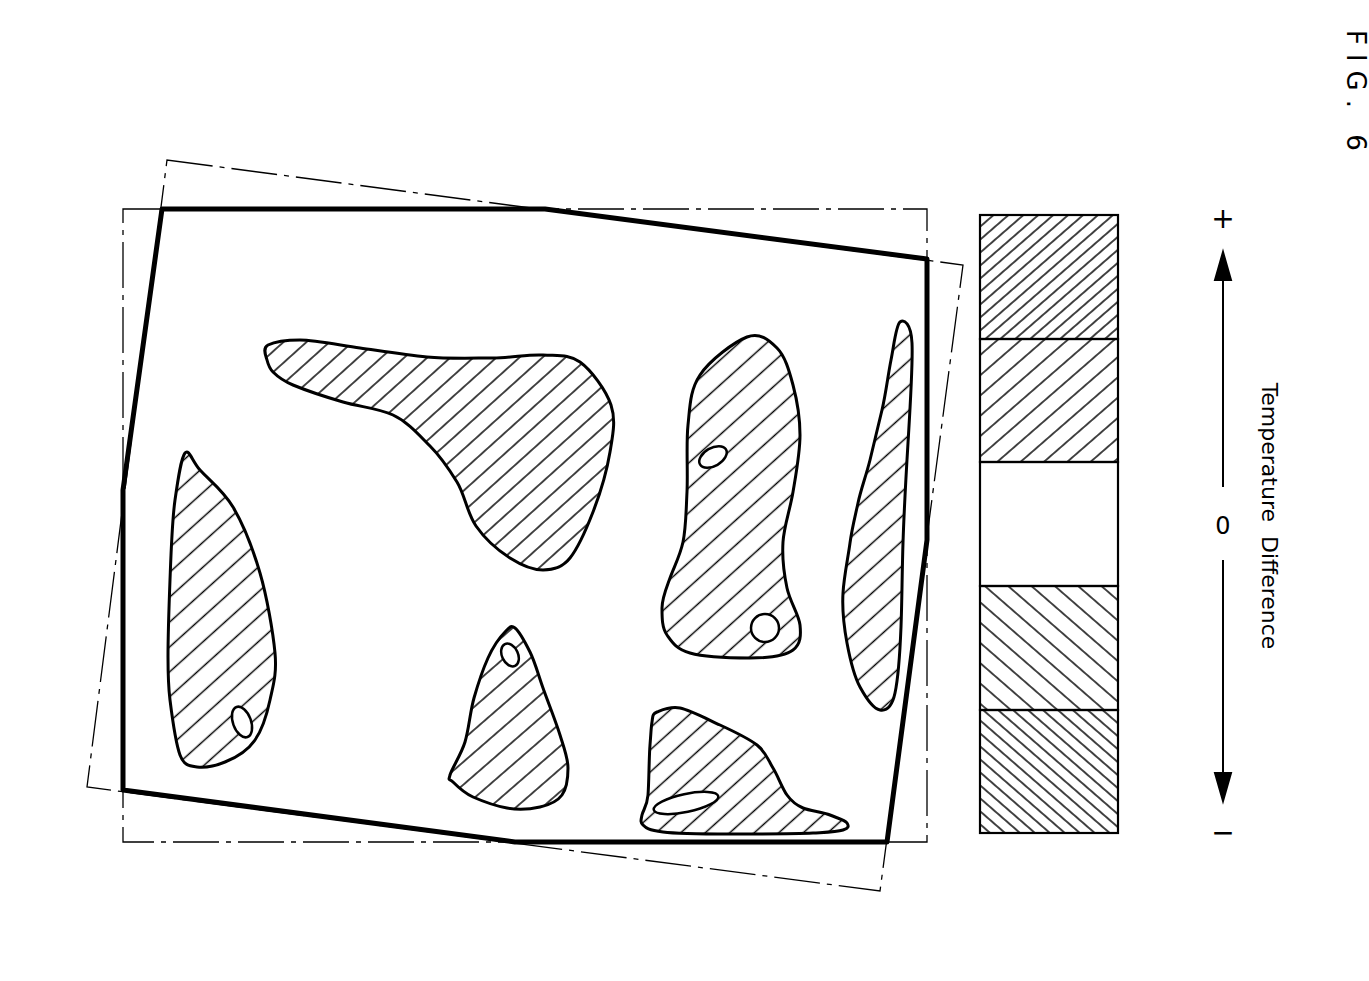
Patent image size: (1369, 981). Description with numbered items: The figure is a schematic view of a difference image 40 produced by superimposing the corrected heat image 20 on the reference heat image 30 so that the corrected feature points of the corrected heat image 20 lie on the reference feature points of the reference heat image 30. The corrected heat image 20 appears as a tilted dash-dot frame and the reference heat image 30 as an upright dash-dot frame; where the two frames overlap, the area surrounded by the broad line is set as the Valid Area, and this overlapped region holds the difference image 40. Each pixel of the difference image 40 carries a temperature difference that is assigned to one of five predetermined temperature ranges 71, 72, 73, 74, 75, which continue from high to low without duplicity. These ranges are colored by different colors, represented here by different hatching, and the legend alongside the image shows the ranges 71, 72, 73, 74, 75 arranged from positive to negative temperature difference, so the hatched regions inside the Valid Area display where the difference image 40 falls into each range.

The corrected heat image 20 is at (318, 181).
The reference heat image 30 is at (730, 208).
The difference image 40 is at (835, 246).
The predetermined temperature range 71 is at (1118, 280).
The predetermined temperature range 72 is at (1118, 403).
The predetermined temperature range 73 is at (1118, 526).
The predetermined temperature range 74 is at (1118, 650).
The predetermined temperature range 75 is at (1118, 773).